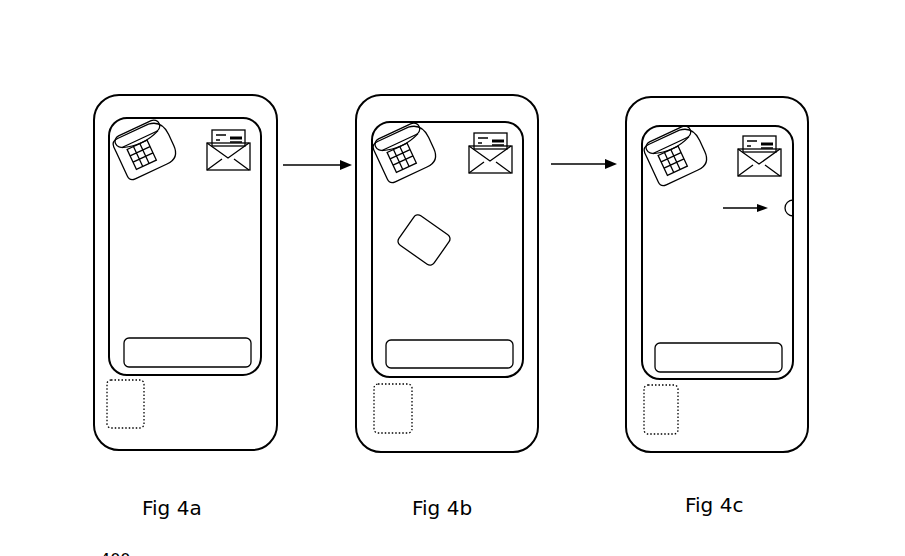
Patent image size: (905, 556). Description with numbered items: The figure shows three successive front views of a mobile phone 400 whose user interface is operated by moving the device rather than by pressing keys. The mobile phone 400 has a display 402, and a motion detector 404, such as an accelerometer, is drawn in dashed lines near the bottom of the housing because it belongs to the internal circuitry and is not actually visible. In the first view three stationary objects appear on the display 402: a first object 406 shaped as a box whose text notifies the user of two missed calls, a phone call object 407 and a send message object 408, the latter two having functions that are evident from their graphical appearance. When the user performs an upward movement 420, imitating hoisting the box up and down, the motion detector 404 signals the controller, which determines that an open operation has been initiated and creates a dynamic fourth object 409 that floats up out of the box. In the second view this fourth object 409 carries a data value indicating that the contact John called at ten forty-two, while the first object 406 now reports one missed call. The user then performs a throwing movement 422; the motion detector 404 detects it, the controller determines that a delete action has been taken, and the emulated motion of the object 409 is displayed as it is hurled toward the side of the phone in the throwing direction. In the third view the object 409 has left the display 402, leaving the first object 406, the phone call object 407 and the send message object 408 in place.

In FIG. 4A, the mobile phone 400 is at (203, 75).
In FIG. 4B, the mobile phone 400 is at (470, 75).
In FIG. 4C, the mobile phone 400 is at (738, 78).
In FIG. 4A, the display 402 is at (105, 147).
In FIG. 4B, the display 402 is at (370, 150).
In FIG. 4C, the display 402 is at (642, 152).
In FIG. 4A, the motion detector 404 is at (108, 417).
In FIG. 4B, the motion detector 404 is at (374, 422).
In FIG. 4C, the motion detector 404 is at (644, 423).
In FIG. 4A, the first object 406 is at (125, 352).
In FIG. 4B, the first object 406 is at (387, 354).
In FIG. 4C, the first object 406 is at (656, 357).
In FIG. 4A, the phone call object 407 is at (148, 130).
In FIG. 4B, the phone call object 407 is at (411, 132).
In FIG. 4C, the phone call object 407 is at (677, 134).
In FIG. 4A, the send message object 408 is at (233, 129).
In FIG. 4B, the send message object 408 is at (498, 132).
In FIG. 4C, the send message object 408 is at (764, 135).
In FIG. 4B, the fourth object 409 is at (397, 248).
In FIG. 4B, the upward movement 420 is at (317, 178).
In FIG. 4C, the throwing movement 422 is at (584, 176).